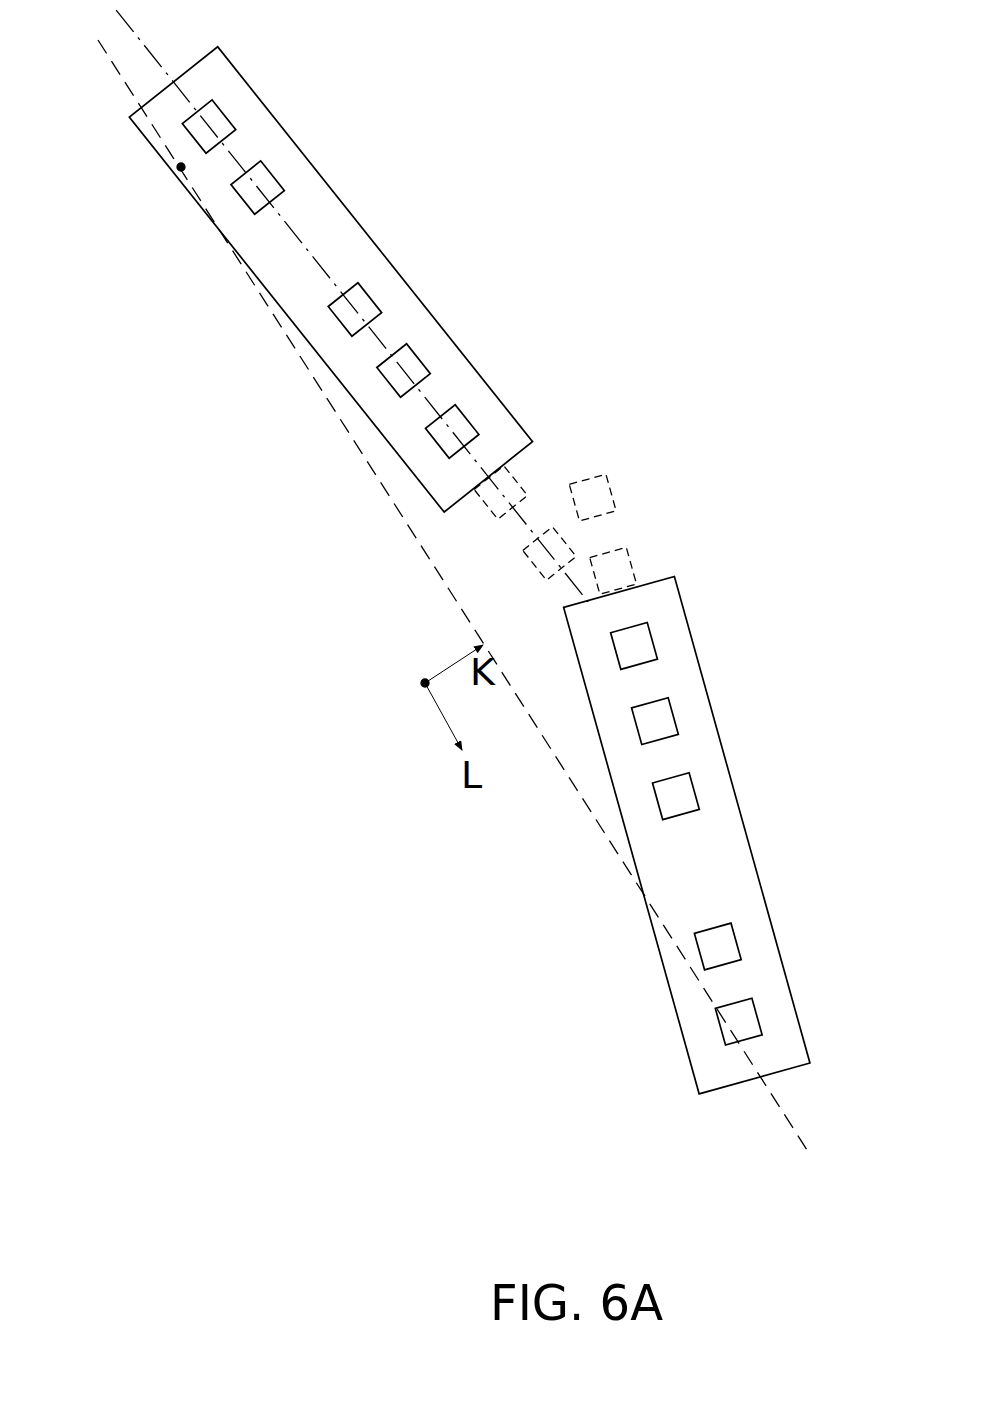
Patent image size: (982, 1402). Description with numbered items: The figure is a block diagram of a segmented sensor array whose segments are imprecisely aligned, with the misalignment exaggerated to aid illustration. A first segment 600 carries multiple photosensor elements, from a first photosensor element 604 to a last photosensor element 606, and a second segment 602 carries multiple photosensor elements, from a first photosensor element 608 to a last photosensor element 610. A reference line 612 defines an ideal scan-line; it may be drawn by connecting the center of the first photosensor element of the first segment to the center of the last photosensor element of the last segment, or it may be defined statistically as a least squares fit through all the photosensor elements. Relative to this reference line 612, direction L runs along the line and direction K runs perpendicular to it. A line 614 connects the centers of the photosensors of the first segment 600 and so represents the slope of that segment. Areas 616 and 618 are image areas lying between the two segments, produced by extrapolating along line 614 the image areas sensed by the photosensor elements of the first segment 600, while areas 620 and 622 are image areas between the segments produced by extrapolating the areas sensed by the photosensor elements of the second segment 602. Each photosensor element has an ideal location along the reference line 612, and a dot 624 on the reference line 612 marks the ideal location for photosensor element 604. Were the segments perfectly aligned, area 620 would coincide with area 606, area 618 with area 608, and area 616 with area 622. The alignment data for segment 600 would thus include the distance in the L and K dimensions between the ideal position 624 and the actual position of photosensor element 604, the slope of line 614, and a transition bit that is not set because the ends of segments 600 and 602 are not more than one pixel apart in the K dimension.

The first segment 600 is at (129, 116).
The second segment 602 is at (694, 1082).
The photosensor element 604 is at (225, 123).
The photosensor element 606 is at (466, 414).
The photosensor element 608 is at (657, 647).
The photosensor element 610 is at (760, 1025).
The reference line 612 is at (582, 800).
The line 614 is at (380, 332).
The area 616 is at (485, 507).
The area 618 is at (538, 568).
The area 620 is at (607, 472).
The area 622 is at (627, 548).
The dot 624 is at (179, 170).